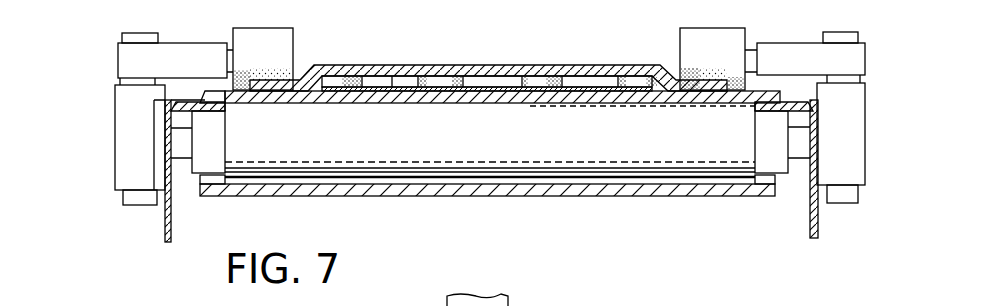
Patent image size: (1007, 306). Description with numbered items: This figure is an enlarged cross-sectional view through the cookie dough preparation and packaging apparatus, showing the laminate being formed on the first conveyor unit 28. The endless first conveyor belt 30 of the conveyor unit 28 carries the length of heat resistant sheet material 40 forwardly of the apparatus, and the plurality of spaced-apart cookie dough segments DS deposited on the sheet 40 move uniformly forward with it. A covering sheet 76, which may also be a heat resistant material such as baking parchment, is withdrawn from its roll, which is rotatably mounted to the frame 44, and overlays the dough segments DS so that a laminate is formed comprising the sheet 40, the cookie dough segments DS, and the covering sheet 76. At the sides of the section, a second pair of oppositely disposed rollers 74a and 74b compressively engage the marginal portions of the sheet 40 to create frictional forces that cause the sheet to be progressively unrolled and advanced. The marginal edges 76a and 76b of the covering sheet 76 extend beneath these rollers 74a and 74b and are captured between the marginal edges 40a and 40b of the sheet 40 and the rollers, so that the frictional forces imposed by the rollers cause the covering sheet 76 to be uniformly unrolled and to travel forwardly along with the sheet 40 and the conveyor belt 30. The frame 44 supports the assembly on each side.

The first conveyor unit 28 is at (190, 141).
The first conveyor belt 30 is at (367, 98).
The length of heat resistant sheet material 40 is at (393, 76).
The marginal edge of sheet 40a is at (273, 91).
The marginal edge of sheet 40b is at (715, 88).
The frame 44 is at (810, 232).
The roller 74a is at (250, 42).
The roller 74b is at (700, 32).
The covering sheet 76 is at (488, 65).
The marginal edge of covering sheet 76a is at (263, 82).
The marginal edge of covering sheet 76b is at (705, 80).
The dough segments DS is at (443, 77).